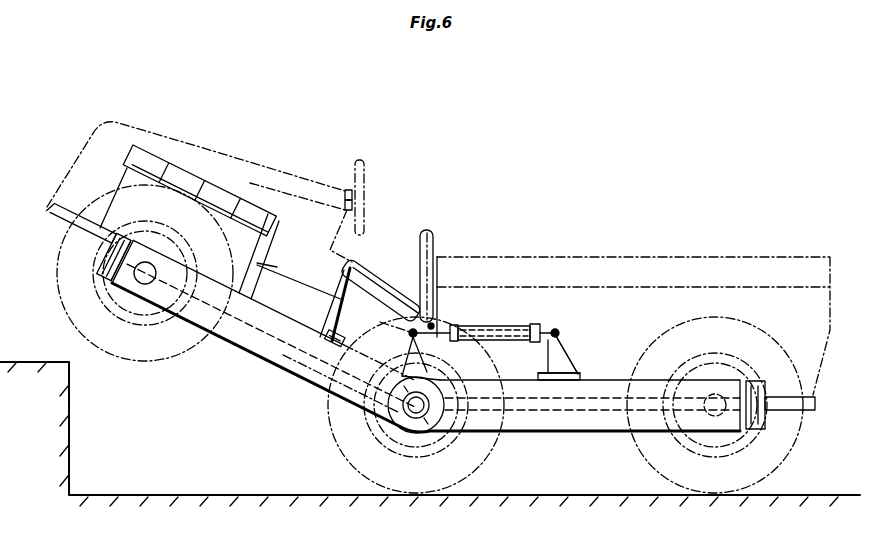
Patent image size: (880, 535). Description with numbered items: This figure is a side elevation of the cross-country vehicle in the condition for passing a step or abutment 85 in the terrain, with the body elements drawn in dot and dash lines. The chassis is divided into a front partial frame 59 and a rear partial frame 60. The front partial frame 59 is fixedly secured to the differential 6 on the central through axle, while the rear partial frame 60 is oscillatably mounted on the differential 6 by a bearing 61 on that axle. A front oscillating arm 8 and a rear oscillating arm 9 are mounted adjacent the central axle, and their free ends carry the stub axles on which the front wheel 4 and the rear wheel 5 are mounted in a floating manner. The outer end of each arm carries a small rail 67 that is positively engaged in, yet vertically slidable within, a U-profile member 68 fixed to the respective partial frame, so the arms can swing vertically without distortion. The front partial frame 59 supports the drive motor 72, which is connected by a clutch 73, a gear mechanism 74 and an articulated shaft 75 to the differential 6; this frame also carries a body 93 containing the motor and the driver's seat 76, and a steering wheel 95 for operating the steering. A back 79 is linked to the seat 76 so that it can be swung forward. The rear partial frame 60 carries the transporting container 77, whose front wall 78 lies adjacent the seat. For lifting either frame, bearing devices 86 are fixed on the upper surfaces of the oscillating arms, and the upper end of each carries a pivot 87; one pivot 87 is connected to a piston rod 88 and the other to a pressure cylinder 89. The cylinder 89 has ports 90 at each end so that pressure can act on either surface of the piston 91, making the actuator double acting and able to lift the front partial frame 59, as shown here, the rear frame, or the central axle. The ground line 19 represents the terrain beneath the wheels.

The front wheel 4 is at (148, 363).
The rear wheel 5 is at (790, 446).
The differential 6 is at (433, 390).
The front oscillating arm 8 is at (268, 357).
The rear oscillating arm 9 is at (592, 432).
The ground 19 is at (351, 496).
The front partial frame 59 is at (52, 222).
The rear partial frame 60 is at (818, 403).
The bearing 61 is at (392, 422).
The rail 67 is at (112, 282).
The U-profile member 68 is at (113, 242).
The drive motor 72 is at (200, 190).
The clutch 73 is at (280, 262).
The gear mechanism 74 is at (297, 290).
The articulated shaft 75 is at (348, 342).
The seat 76 is at (374, 275).
The transporting container 77 is at (705, 270).
The front wall 78 is at (443, 273).
The back 79 is at (428, 240).
The step or abutment 85 is at (32, 419).
The bearing device 86 is at (397, 349).
The pivot 87 is at (433, 325).
The piston rod 88 is at (455, 332).
The pressure cylinder 89 is at (510, 327).
The port 90 is at (462, 345).
The piston 91 is at (537, 327).
The body 93 is at (142, 134).
The steering wheel 95 is at (362, 185).